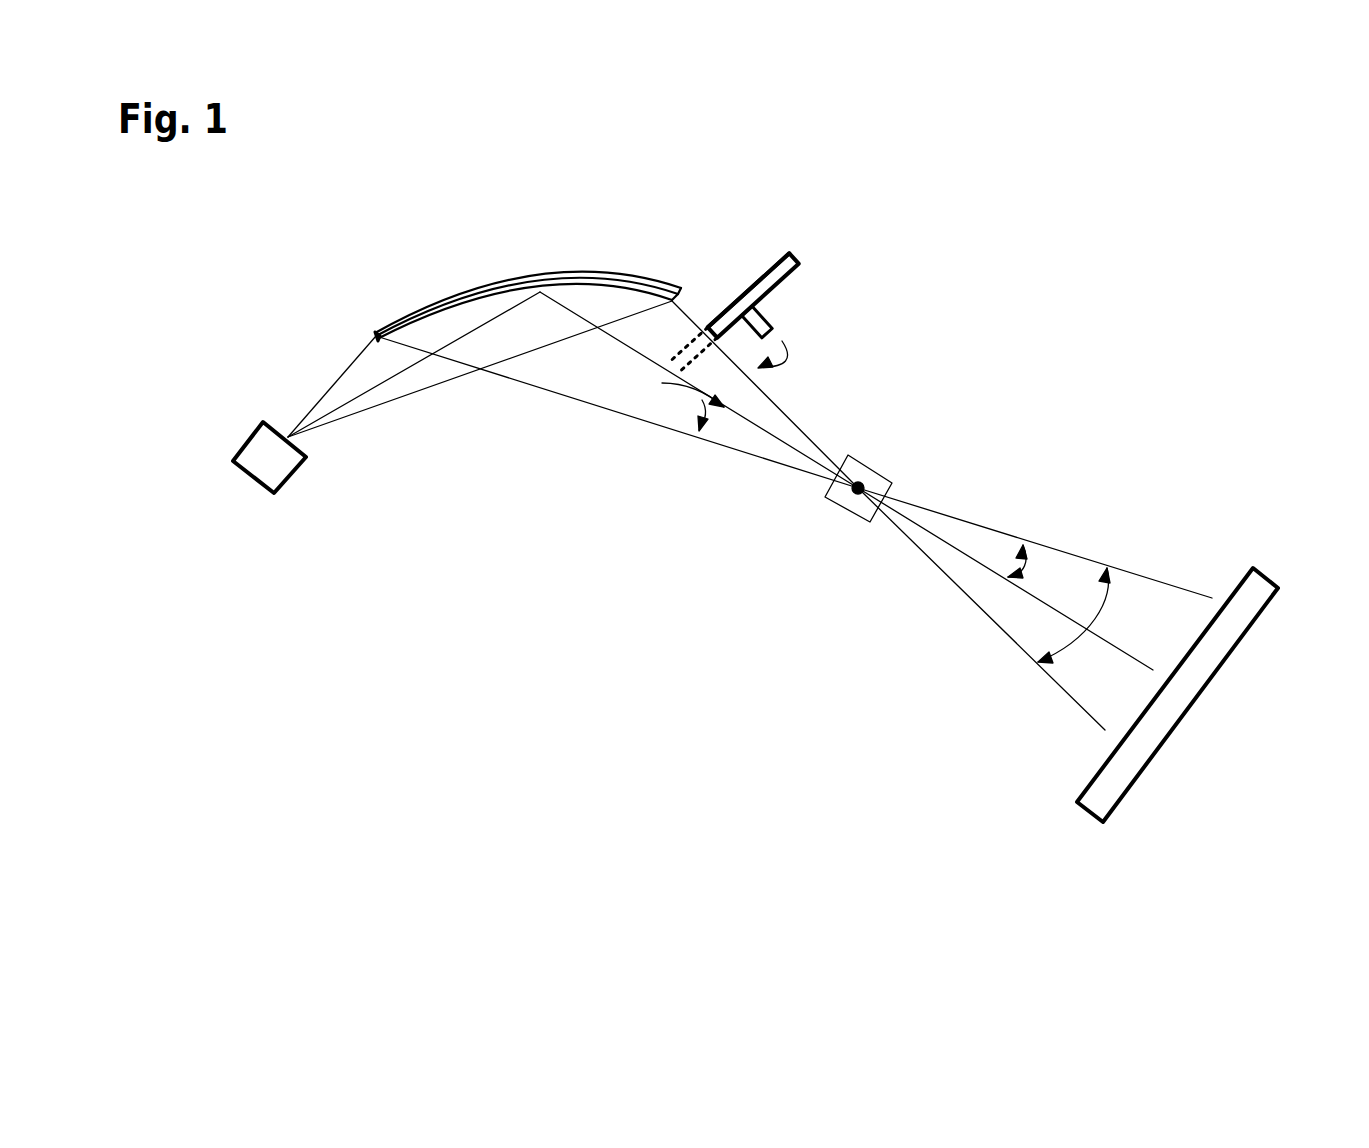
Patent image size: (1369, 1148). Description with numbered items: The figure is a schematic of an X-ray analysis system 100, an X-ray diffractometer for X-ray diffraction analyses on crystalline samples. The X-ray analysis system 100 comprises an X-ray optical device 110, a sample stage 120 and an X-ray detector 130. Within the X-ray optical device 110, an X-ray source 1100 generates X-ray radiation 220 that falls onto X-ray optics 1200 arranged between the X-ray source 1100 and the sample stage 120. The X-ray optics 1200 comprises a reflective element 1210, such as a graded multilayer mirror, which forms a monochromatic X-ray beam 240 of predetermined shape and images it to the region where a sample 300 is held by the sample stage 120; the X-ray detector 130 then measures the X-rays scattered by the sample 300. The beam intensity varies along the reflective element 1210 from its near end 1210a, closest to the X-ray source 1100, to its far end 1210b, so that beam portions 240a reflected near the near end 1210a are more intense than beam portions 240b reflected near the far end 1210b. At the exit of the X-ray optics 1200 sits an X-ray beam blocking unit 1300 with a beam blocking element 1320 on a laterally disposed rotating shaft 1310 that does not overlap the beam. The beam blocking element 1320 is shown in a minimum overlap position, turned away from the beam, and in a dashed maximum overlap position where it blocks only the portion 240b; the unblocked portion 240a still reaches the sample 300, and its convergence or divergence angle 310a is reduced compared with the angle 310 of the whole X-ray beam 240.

The X-ray analysis system 100 is at (592, 869).
The X-ray optical device 110 is at (503, 515).
The X-ray source 1100 is at (272, 458).
The X-ray radiation 220 is at (332, 383).
The X-ray optics 1200 is at (486, 236).
The reflective element 1210 is at (543, 275).
The near end of reflective element 1210a is at (375, 334).
The far end of reflective element 1210b is at (676, 286).
The X-ray beam blocking unit 1300 is at (789, 244).
The rotating shaft 1310 is at (760, 331).
The beam blocking element 1320 is at (768, 270).
The X-ray beam 240 is at (588, 417).
The beam portion reflected from near end 240a is at (738, 438).
The beam portion reflected from far end 240b is at (793, 421).
The sample stage 120 is at (833, 505).
The sample 300 is at (858, 494).
The convergence or divergence angle of unblocked beam portion 310a is at (662, 383).
The convergence or divergence angle of whole beam 310 is at (1097, 612).
The X-ray detector 130 is at (1082, 813).